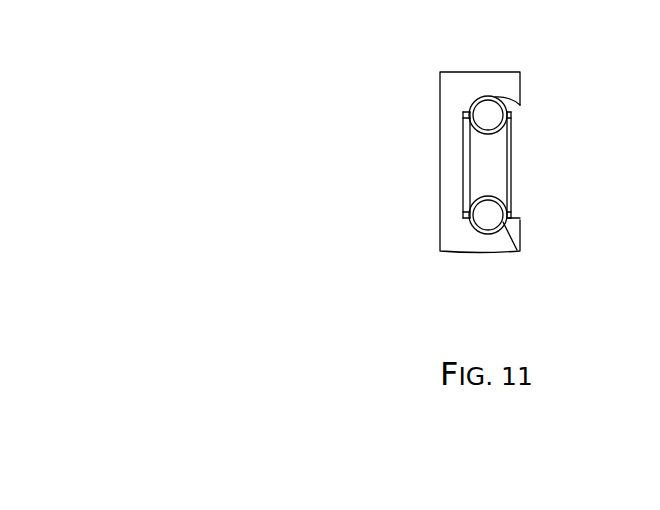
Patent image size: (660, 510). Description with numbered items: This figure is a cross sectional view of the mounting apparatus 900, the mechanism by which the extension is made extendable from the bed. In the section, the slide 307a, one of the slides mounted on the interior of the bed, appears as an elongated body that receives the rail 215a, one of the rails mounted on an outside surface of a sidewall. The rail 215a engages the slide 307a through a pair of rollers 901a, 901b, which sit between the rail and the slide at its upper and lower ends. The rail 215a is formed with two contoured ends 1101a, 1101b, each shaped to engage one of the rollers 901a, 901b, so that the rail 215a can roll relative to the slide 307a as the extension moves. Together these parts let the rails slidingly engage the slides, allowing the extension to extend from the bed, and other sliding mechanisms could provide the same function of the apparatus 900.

The mounting apparatus 900 is at (240, 152).
The slide 307a is at (440, 148).
The rail 215a is at (508, 145).
The roller 901a is at (512, 109).
The roller 901b is at (511, 218).
The contoured end 1101a is at (498, 132).
The contoured end 1101b is at (490, 197).